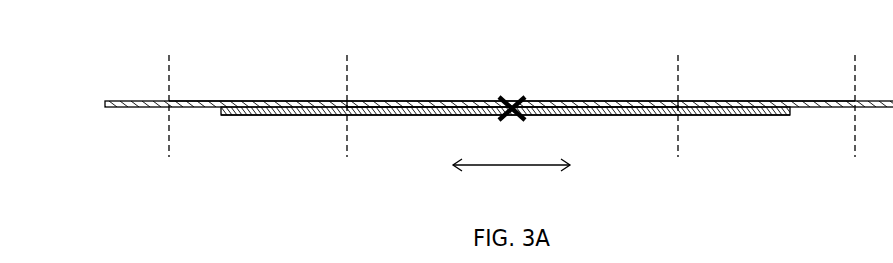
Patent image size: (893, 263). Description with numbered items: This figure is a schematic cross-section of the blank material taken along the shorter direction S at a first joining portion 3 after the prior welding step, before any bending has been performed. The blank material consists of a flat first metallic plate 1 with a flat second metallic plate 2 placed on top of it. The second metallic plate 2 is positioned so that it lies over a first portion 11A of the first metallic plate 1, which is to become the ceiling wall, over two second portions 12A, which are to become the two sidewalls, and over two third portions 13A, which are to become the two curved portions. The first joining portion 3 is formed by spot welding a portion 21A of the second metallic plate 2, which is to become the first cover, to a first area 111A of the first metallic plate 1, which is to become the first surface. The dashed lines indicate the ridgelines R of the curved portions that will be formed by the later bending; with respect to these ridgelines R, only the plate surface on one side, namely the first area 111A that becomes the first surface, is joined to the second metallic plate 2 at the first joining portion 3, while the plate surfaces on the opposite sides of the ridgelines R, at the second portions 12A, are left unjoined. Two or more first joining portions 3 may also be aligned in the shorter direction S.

The first metallic plate 1 is at (130, 99).
The second metallic plate 2 is at (263, 116).
The first joining portion 3 is at (512, 97).
The first portion 11A is at (540, 100).
The first area 111A is at (580, 112).
The second portions 12A is at (237, 100).
The third portions 13A is at (347, 100).
The portion of the second metallic plate 21A is at (599, 116).
The ridgeline R is at (512, 93).
The shorter direction S is at (511, 179).